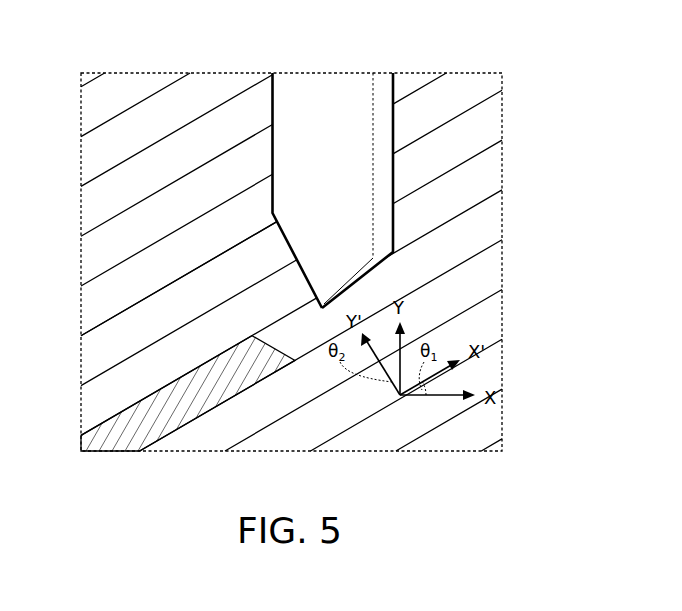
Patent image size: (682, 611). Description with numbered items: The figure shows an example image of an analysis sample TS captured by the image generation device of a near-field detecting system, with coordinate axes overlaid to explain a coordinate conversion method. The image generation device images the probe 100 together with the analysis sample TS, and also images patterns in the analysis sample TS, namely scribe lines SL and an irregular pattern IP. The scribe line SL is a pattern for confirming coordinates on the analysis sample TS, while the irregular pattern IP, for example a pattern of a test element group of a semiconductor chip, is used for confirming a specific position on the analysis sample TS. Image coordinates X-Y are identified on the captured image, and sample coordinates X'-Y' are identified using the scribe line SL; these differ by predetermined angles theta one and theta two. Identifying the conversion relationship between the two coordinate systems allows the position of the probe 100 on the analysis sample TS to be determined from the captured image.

The probe 100 is at (307, 102).
The analysis sample TS is at (503, 119).
The scribe line SL is at (117, 313).
The irregular pattern IP is at (153, 416).